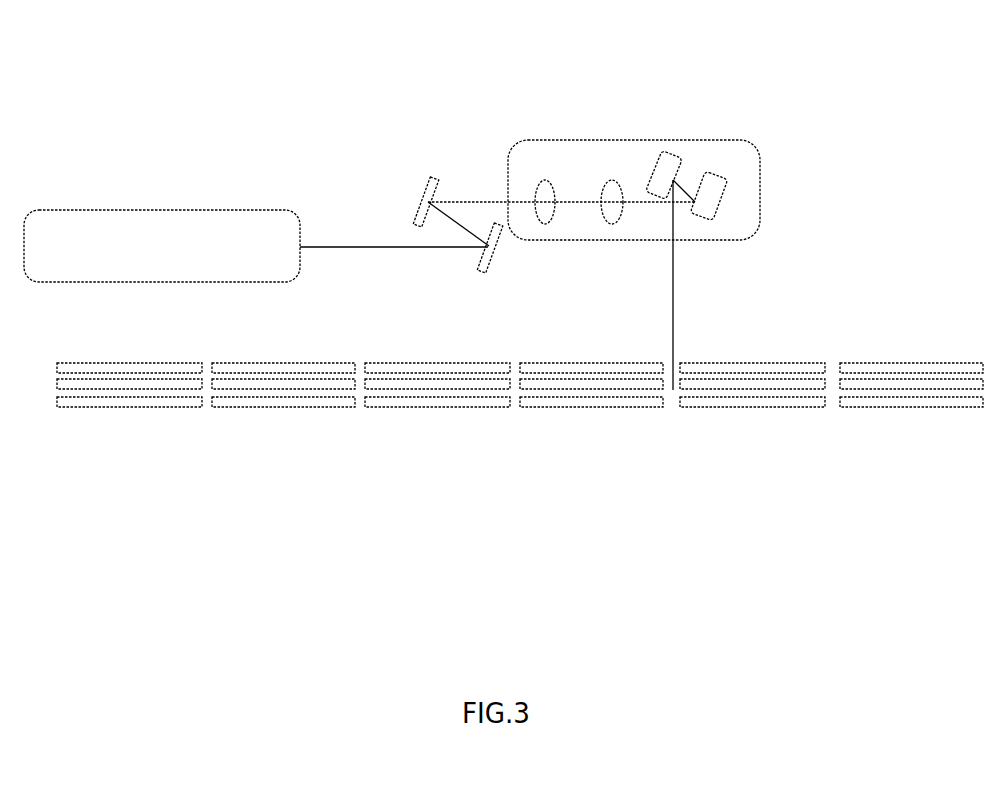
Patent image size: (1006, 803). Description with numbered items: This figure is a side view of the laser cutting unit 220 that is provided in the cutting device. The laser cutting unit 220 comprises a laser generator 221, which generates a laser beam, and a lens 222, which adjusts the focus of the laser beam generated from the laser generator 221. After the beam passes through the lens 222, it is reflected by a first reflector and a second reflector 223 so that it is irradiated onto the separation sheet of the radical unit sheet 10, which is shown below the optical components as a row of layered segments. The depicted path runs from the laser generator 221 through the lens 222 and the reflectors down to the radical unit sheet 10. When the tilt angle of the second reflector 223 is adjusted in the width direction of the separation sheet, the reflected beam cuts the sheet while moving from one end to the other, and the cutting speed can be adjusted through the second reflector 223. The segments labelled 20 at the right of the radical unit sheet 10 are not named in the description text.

The laser cutting unit 220 is at (335, 82).
The laser generator 221 is at (254, 210).
The lens 222 is at (533, 180).
The second reflector 223 is at (672, 150).
The radical unit sheet 10 is at (437, 409).
The cut display cell 20 is at (852, 409).